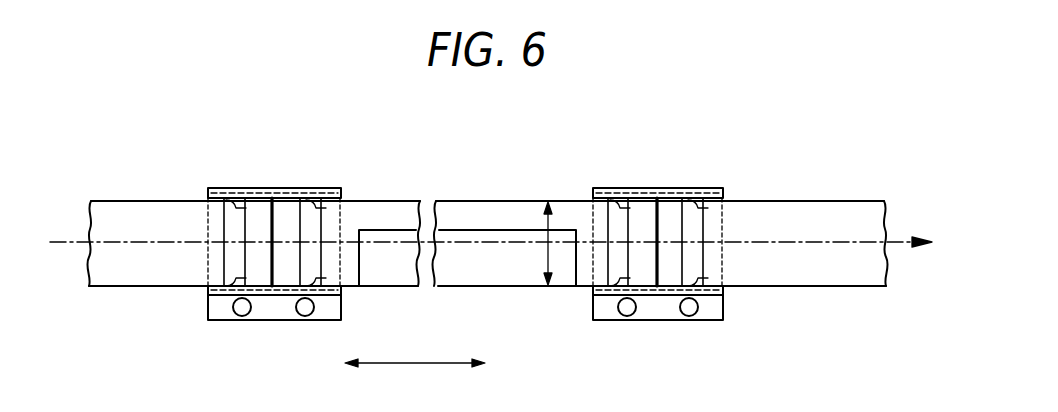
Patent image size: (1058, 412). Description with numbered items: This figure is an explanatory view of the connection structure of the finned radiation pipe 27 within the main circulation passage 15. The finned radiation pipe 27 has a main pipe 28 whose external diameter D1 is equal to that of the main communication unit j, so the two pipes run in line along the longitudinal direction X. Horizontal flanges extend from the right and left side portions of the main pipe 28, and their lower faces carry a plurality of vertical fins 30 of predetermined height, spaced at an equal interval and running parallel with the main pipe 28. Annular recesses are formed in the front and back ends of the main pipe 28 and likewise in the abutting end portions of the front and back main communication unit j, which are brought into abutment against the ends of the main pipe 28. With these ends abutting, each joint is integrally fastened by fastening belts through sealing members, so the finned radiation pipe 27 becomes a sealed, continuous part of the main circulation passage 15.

The main communication unit j is at (172, 222).
The main circulation passage 15 is at (152, 243).
The main pipe 28 is at (405, 212).
The finned radiation pipe 27 is at (670, 236).
The vertical fin 30 is at (502, 265).
The external diameter D1 is at (531, 243).
The longitudinal direction X is at (415, 350).